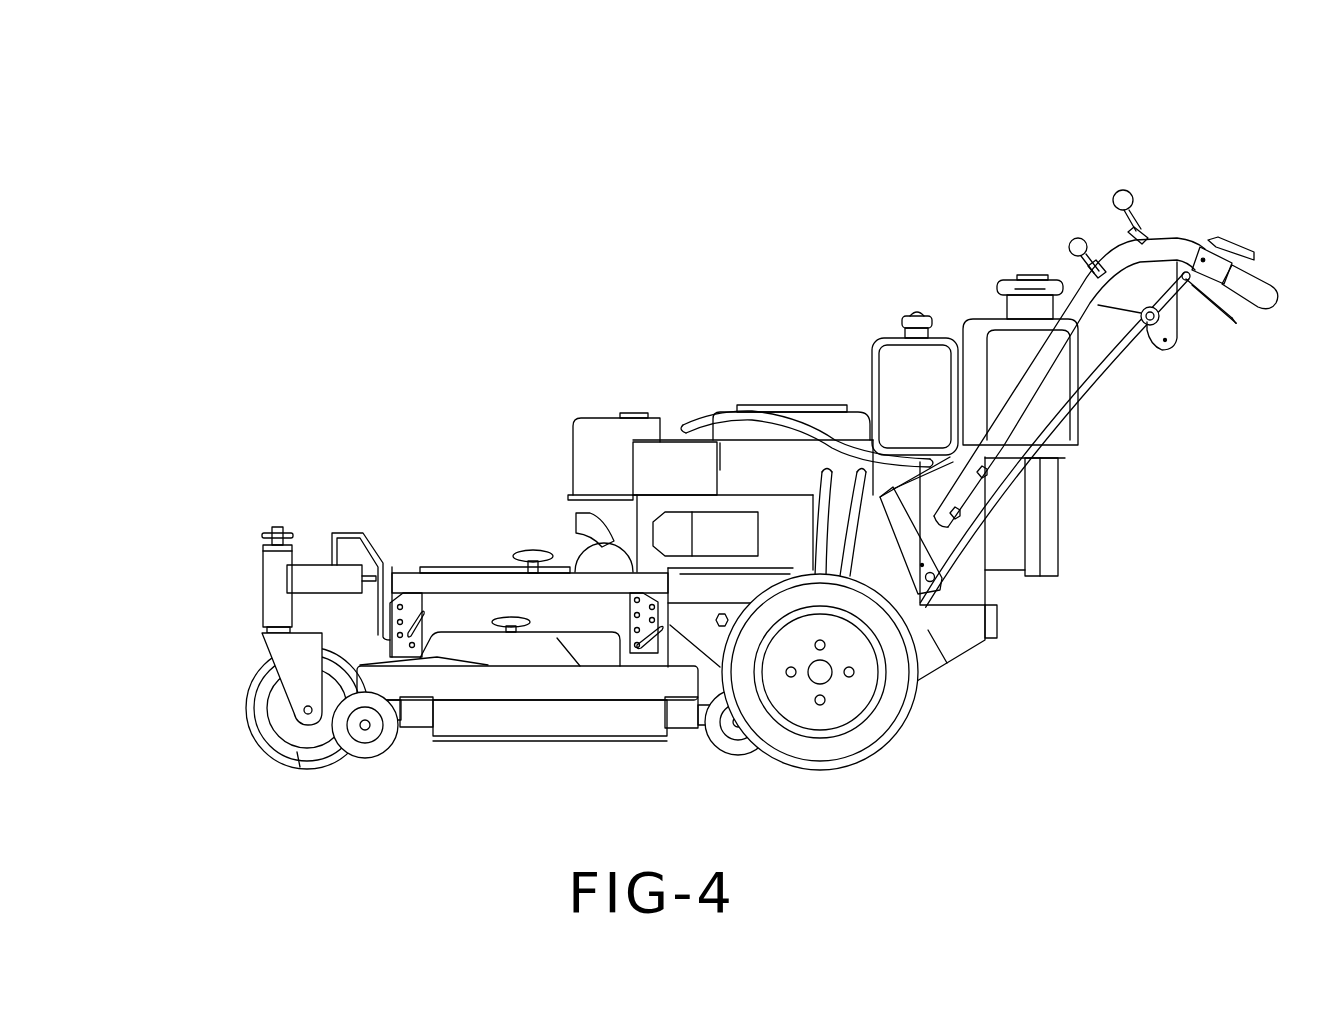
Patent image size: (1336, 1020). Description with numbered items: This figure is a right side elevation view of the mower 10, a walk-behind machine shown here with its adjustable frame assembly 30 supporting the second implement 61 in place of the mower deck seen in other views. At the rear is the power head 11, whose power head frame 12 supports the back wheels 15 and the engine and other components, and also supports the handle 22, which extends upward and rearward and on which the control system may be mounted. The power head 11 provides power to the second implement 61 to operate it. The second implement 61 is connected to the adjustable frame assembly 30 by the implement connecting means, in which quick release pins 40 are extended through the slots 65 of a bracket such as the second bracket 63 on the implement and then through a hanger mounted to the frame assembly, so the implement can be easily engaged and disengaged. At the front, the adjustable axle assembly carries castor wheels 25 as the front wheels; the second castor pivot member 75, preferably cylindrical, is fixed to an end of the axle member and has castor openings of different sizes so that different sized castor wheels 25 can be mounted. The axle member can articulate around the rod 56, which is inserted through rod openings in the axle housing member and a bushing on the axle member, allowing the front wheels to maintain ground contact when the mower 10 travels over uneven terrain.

The mower 10 is at (1216, 155).
The power head 11 is at (800, 299).
The power head frame 12 is at (1000, 621).
The back wheel 15 is at (877, 721).
The handle 22 is at (1168, 241).
The castor wheel 25 is at (280, 666).
The adjustable frame assembly 30 is at (460, 566).
The quick release pin 40 is at (653, 633).
The rod 56 is at (363, 533).
The second implement 61 is at (533, 720).
The second bracket 63 is at (503, 600).
The slots 65 is at (415, 598).
The second castor pivot member 75 is at (272, 576).